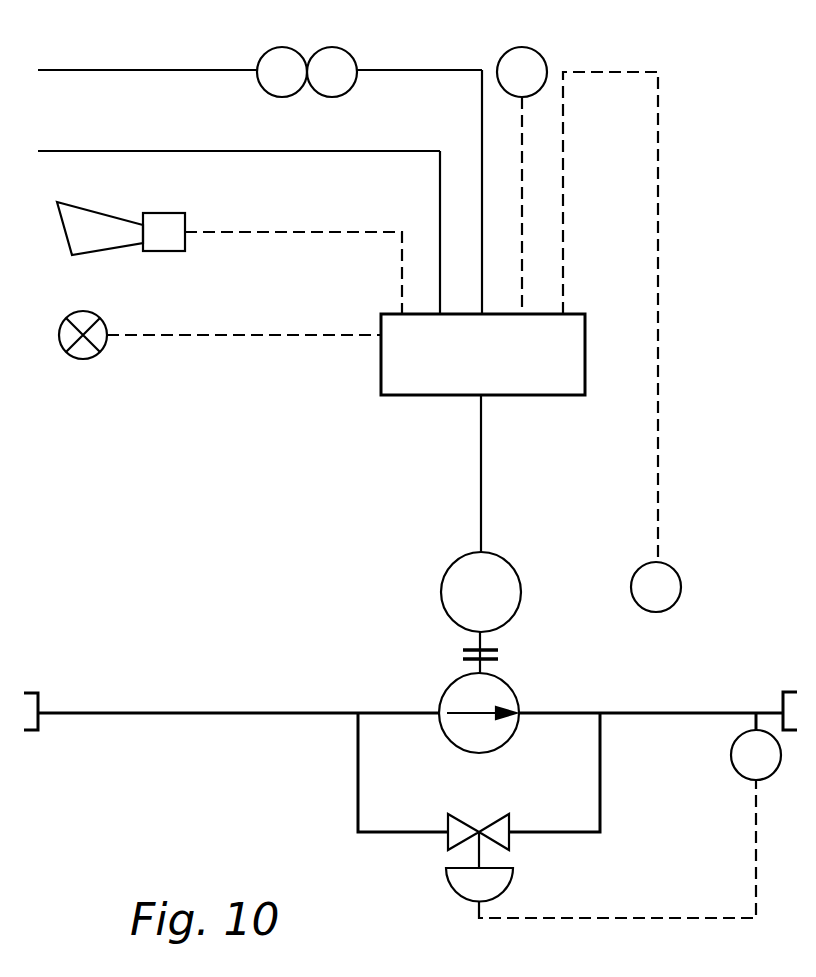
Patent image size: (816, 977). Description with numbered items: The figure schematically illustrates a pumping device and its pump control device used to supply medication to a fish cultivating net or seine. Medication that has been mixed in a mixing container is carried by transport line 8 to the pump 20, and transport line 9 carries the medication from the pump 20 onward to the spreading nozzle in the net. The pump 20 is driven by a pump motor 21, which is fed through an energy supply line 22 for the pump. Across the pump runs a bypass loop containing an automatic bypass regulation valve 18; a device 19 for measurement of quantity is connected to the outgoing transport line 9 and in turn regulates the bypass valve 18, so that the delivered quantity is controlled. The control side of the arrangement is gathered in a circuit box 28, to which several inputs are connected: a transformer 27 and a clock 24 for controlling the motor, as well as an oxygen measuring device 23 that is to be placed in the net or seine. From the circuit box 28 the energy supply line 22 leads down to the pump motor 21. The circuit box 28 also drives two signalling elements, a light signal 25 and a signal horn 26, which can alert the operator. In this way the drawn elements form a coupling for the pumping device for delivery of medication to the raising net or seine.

The transport line 8 is at (38, 722).
The transport line 9 is at (657, 712).
The automatic bypass regulation valve 18 is at (512, 885).
The device for measurement of quantity 19 is at (732, 752).
The pump 20 is at (472, 753).
The pump motor 21 is at (517, 613).
The energy supply line 22 is at (483, 478).
The oxygen measuring device 23 is at (652, 613).
The clock 24 is at (542, 50).
The light signal 25 is at (85, 360).
The signal horn 26 is at (155, 252).
The transformer 27 is at (307, 55).
The circuit box 28 is at (407, 382).